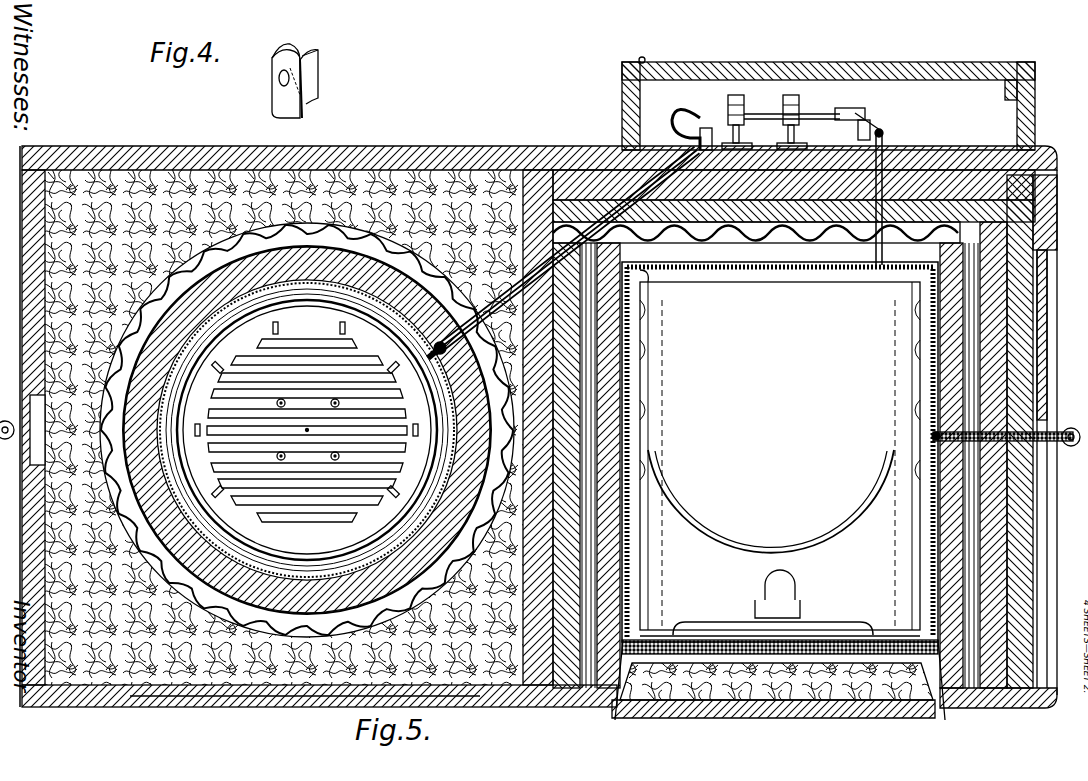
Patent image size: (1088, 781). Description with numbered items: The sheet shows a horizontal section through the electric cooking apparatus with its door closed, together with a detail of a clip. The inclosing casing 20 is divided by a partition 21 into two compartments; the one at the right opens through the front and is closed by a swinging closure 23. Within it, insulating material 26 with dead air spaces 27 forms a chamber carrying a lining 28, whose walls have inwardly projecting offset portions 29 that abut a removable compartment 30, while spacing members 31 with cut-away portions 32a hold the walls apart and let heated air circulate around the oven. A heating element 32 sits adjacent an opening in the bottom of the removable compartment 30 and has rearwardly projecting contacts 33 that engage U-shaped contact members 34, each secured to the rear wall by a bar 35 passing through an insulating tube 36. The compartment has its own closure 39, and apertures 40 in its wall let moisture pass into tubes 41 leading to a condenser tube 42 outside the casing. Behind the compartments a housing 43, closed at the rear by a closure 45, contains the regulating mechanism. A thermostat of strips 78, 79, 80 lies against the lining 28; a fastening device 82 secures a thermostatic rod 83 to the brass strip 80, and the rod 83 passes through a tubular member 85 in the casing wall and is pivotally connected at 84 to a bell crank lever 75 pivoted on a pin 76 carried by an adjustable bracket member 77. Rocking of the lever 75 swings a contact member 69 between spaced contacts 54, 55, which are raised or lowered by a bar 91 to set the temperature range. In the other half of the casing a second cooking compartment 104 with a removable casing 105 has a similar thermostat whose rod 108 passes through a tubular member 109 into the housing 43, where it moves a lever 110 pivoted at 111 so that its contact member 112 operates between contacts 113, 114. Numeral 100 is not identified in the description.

In FIG. 5, the inclosing casing 20 is at (417, 160).
In FIG. 5, the partition 21 is at (548, 185).
In FIG. 5, the swinging closure 23 is at (915, 702).
In FIG. 5, the insulating material 26 is at (1000, 205).
In FIG. 5, the dead air spaces 27 is at (985, 233).
In FIG. 5, the lining 28 is at (625, 368).
In FIG. 5, the offset portions 29 is at (600, 655).
In FIG. 5, the removable compartment 30 is at (650, 420).
In FIG. 5, the spacing members 31 is at (642, 390).
In FIG. 5, the heating element 32 is at (762, 296).
In FIG. 5, the cut-away or recessed portions 32a is at (705, 492).
In FIG. 5, the rearwardly projecting contacts 33 is at (710, 280).
In FIG. 4, the contact members 34 is at (306, 58).
In FIG. 5, the contact members 34 is at (650, 278).
In FIG. 5, the bar 35 is at (794, 185).
In FIG. 5, the insulating tube 36 is at (794, 211).
In FIG. 5, the closure 39 is at (823, 640).
In FIG. 5, the apertures 40 is at (900, 505).
In FIG. 5, the tubes 41 is at (1010, 432).
In FIG. 5, the condenser tube 42 is at (1072, 428).
In FIG. 5, the housing 43 is at (975, 95).
In FIG. 5, the closure 45 is at (825, 75).
In FIG. 5, the contact 54 is at (834, 125).
In FIG. 5, the contact 55 is at (805, 125).
In FIG. 5, the contact member 69 is at (825, 110).
In FIG. 5, the bell crank lever 75 is at (865, 110).
In FIG. 5, the pivot pin 76 is at (875, 125).
In FIG. 5, the bracket member 77 is at (830, 128).
In FIG. 5, the thermostat strip 78 is at (860, 275).
In FIG. 5, the thermostat strip 79 is at (912, 292).
In FIG. 5, the thermostat strip 80 is at (545, 427).
In FIG. 5, the fastening device 82 is at (400, 335).
In FIG. 5, the thermostatic rod 83 is at (887, 175).
In FIG. 5, the pivotal connection 84 is at (885, 131).
In FIG. 5, the tubular member 85 is at (885, 160).
In FIG. 5, the bar 91 is at (792, 128).
In FIG. 5, the outer casing 100 is at (98, 668).
In FIG. 5, the cooking compartment 104 is at (232, 560).
In FIG. 5, the removable casing 105 is at (278, 567).
In FIG. 5, the rod 108 is at (500, 225).
In FIG. 5, the tubular member 109 is at (462, 230).
In FIG. 5, the lever 110 is at (678, 120).
In FIG. 5, the pivot 111 is at (708, 120).
In FIG. 5, the contact member 112 is at (707, 128).
In FIG. 5, the contact 113 is at (737, 95).
In FIG. 5, the contact 114 is at (790, 112).